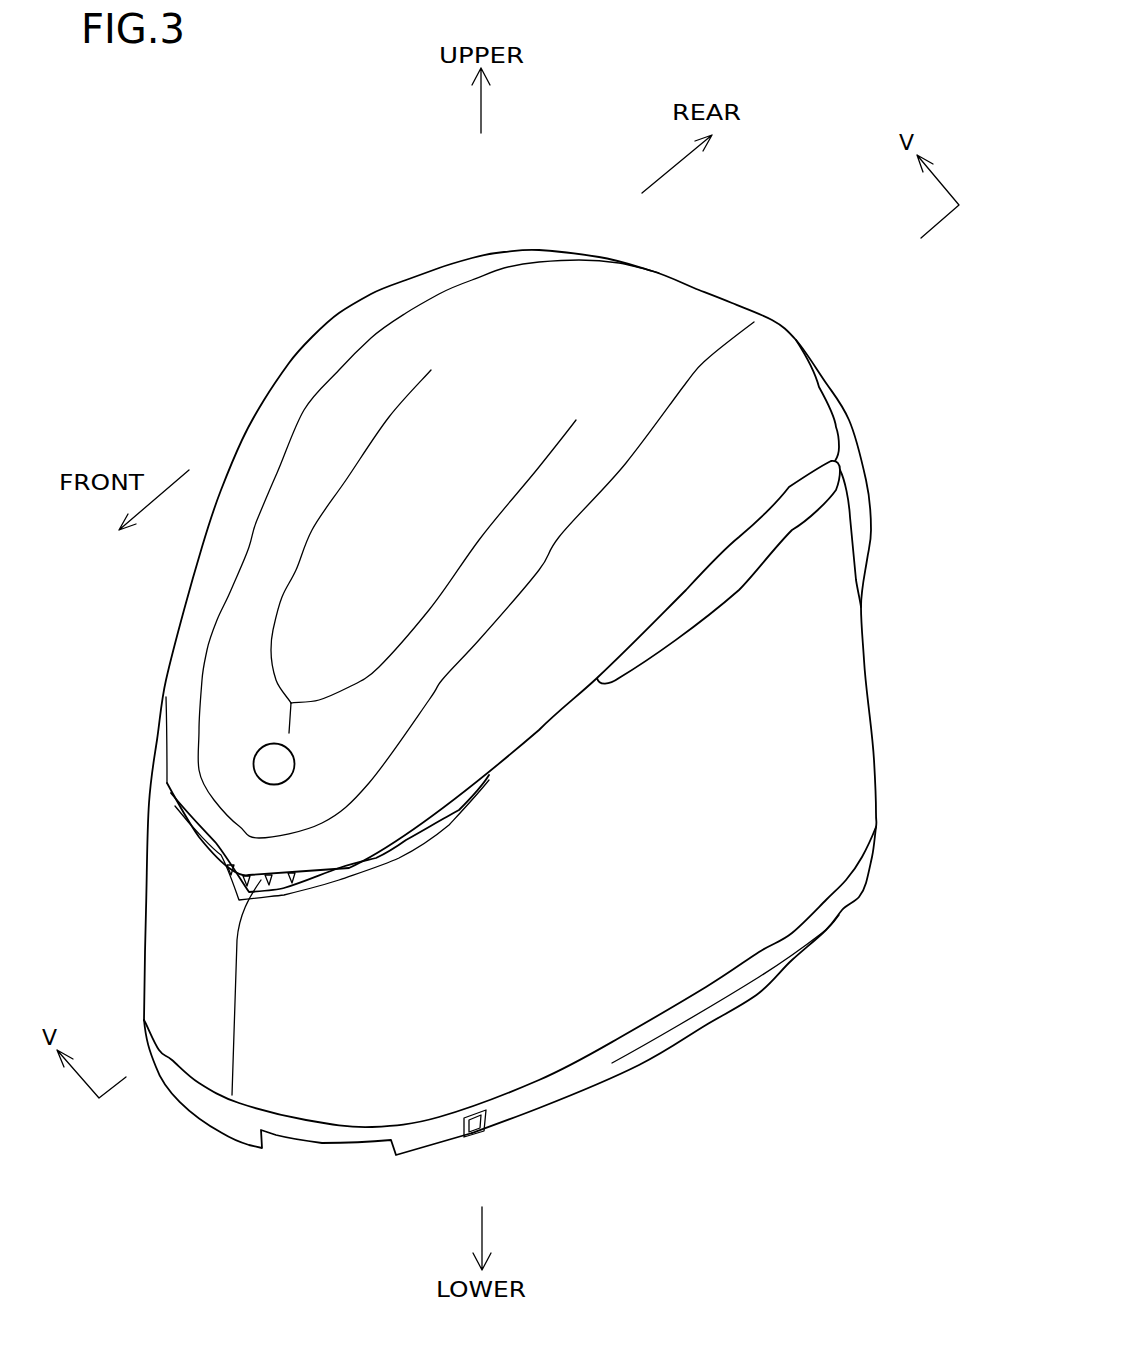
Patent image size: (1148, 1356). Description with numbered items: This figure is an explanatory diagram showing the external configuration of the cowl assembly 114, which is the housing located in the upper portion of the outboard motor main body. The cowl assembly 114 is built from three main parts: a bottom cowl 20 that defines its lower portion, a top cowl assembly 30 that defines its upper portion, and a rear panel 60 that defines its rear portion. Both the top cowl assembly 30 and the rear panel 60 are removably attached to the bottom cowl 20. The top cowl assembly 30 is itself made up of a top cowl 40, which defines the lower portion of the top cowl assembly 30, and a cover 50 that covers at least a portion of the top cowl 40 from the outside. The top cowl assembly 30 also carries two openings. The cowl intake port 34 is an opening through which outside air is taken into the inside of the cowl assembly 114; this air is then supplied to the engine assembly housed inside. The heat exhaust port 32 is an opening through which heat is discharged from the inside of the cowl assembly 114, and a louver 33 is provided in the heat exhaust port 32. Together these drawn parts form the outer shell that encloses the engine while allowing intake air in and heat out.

The cowl assembly 114 is at (293, 243).
The bottom cowl 20 is at (858, 893).
The top cowl assembly 30 is at (877, 202).
The top cowl 40 is at (785, 608).
The cover 50 is at (672, 330).
The rear panel 60 is at (862, 477).
The cowl intake port 34 is at (705, 587).
The louver 33 is at (247, 880).
The heat exhaust port 32 is at (263, 880).